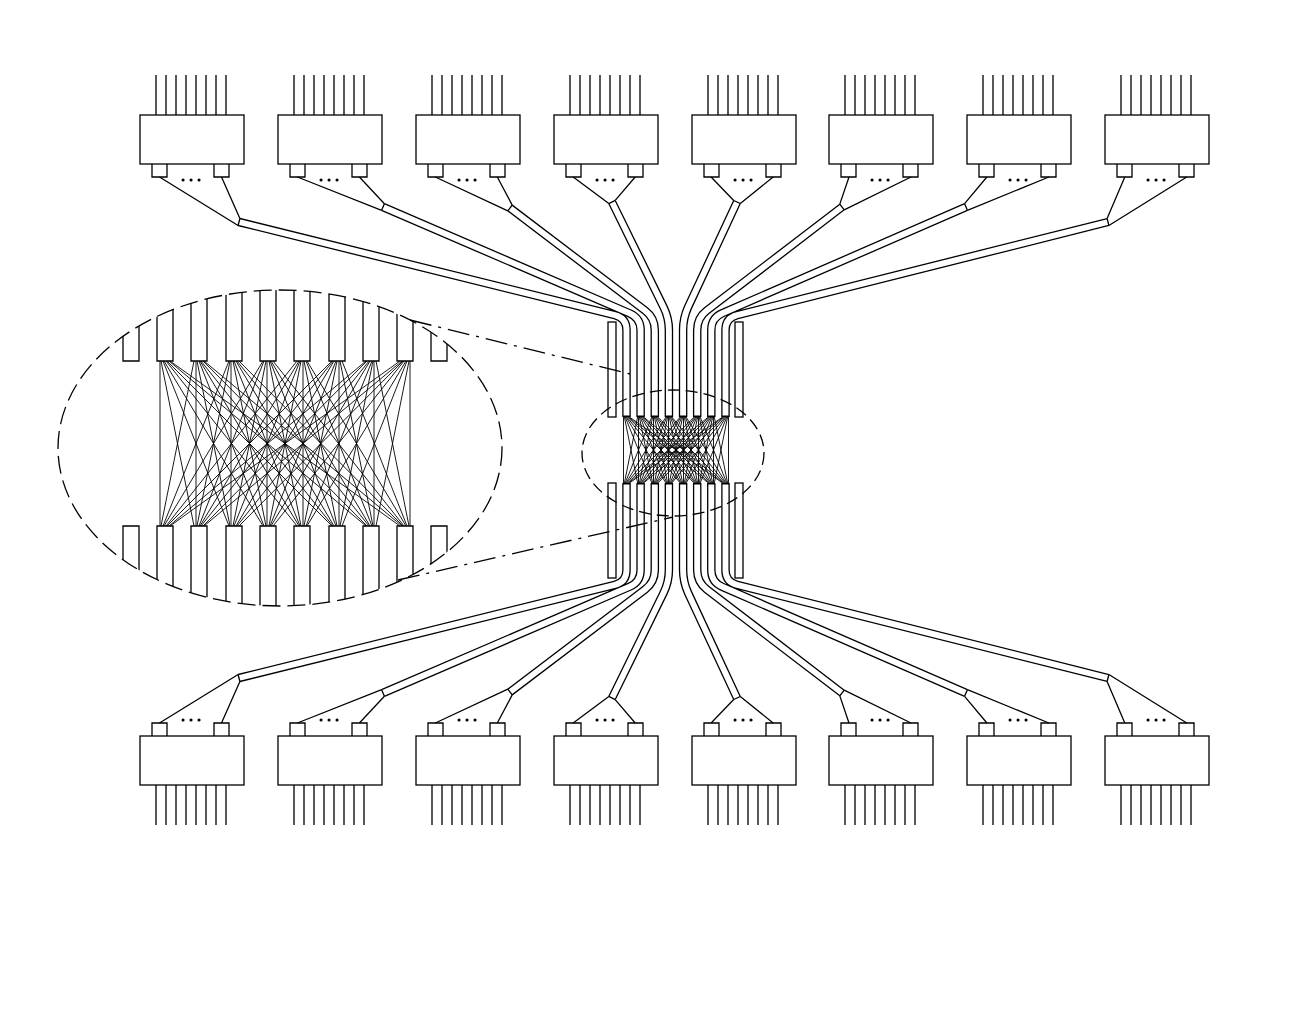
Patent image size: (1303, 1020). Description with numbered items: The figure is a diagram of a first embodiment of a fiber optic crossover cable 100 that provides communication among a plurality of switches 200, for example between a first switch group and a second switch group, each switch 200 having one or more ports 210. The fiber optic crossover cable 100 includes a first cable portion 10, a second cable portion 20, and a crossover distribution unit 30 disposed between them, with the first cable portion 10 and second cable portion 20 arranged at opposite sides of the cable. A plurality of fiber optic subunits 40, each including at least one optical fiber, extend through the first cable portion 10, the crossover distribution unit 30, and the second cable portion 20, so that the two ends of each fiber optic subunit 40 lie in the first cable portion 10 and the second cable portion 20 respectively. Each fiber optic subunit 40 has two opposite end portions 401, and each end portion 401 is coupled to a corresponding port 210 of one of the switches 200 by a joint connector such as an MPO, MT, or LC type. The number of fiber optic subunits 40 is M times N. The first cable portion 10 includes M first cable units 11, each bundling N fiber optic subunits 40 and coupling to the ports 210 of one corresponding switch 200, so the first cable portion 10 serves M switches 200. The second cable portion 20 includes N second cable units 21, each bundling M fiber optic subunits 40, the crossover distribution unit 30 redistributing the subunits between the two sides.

The fiber optic crossover cable 100 is at (673, 37).
The switch 200 is at (148, 140).
The port 210 is at (152, 169).
The end portion 401 is at (1152, 198).
The first cable unit 11 is at (1037, 240).
The first cable portion 10 is at (762, 363).
The crossover distribution unit 30 is at (746, 447).
The fiber optic subunit 40 is at (727, 467).
The second cable portion 20 is at (750, 544).
The second cable unit 21 is at (883, 622).